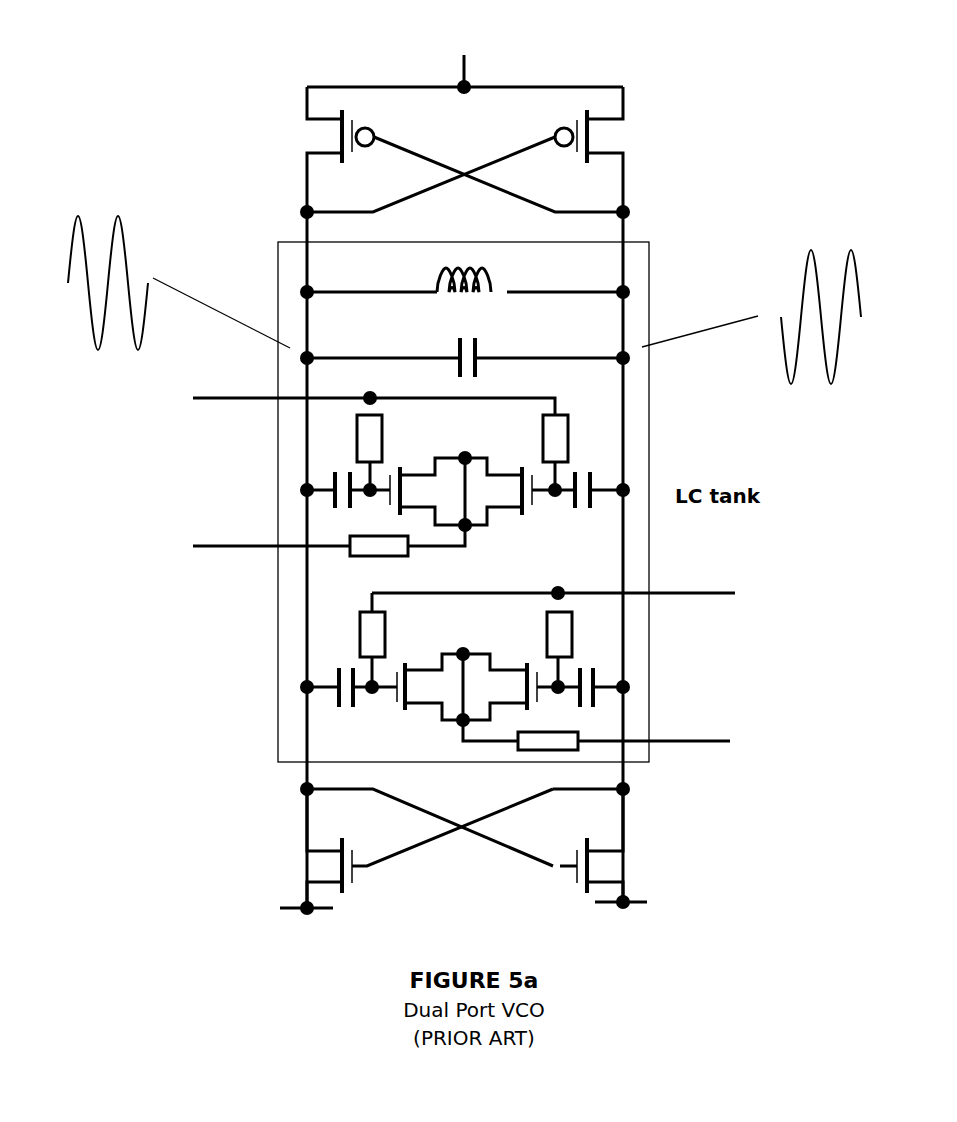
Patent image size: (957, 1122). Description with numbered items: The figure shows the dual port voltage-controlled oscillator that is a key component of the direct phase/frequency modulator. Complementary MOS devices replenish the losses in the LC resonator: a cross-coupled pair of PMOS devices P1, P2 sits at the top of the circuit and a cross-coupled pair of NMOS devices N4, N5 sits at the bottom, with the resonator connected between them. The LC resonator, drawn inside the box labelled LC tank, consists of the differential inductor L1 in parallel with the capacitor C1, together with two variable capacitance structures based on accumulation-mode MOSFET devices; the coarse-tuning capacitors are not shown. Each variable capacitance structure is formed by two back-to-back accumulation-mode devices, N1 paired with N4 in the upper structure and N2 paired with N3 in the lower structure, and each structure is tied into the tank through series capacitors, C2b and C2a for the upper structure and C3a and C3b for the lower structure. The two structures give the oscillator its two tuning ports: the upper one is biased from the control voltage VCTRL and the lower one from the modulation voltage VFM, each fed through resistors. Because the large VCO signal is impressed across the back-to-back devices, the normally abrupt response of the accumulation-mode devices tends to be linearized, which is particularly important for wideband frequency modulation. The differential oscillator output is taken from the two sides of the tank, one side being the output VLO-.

The PMOS device P1 is at (438, 149).
The PMOS device P2 is at (490, 149).
The differential inductor L1 is at (465, 278).
The tank capacitor C1 is at (465, 345).
The negative local oscillator output VLO- is at (751, 317).
The control voltage input VCTRL is at (358, 473).
The FM modulation voltage input VFM is at (559, 668).
The coupling capacitor C2a is at (589, 509).
The coupling capacitor C2b is at (347, 504).
The coupling capacitor C3a is at (348, 704).
The coupling capacitor C3b is at (590, 698).
The accumulation-mode MOSFET device N1 is at (431, 480).
The accumulation-mode MOSFET device N2 is at (458, 675).
The accumulation-mode MOSFET device N3 is at (490, 701).
The NMOS device N4 is at (412, 686).
The NMOS device N5 is at (519, 845).